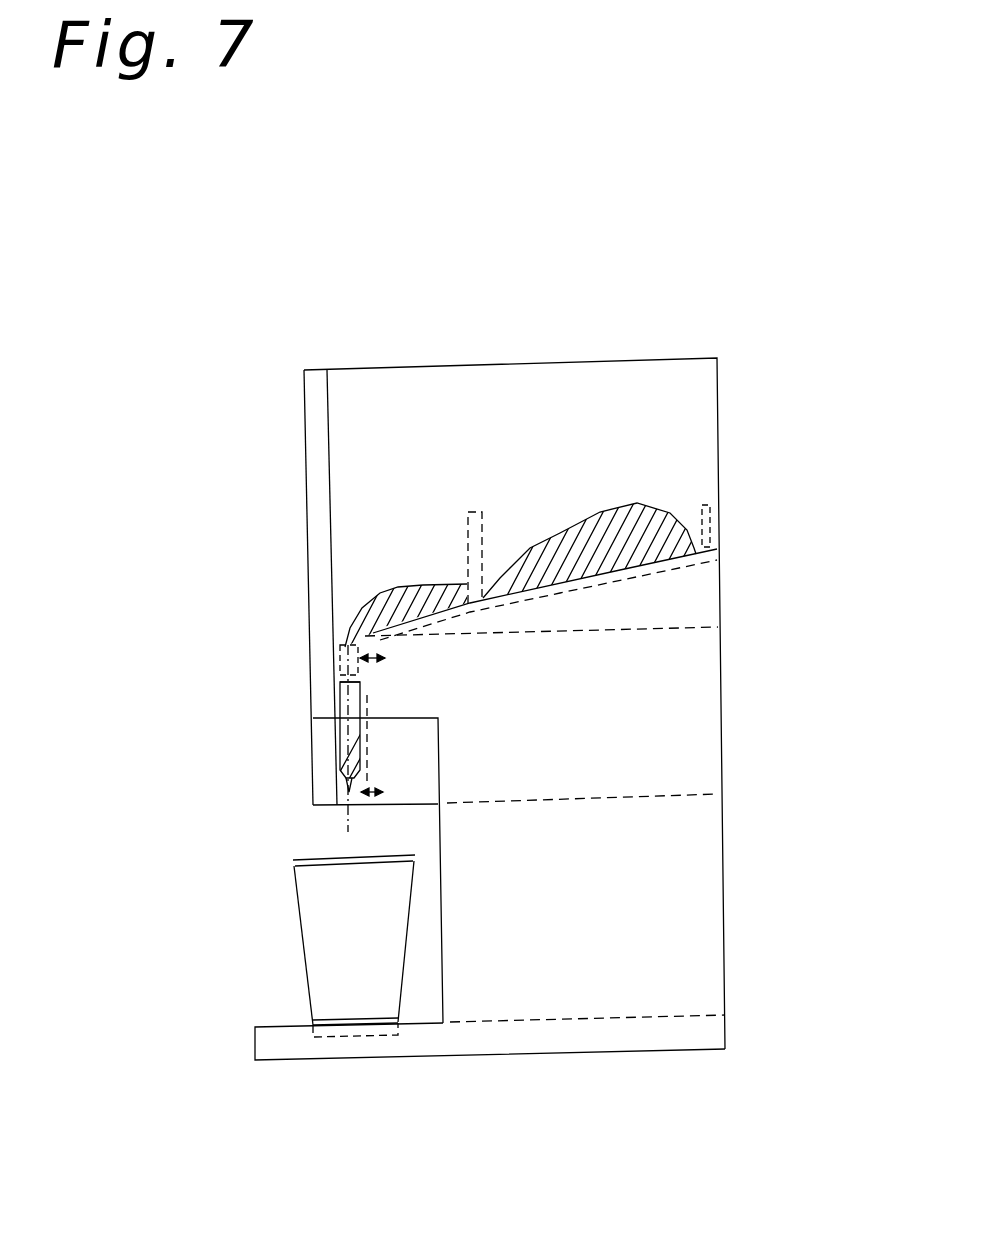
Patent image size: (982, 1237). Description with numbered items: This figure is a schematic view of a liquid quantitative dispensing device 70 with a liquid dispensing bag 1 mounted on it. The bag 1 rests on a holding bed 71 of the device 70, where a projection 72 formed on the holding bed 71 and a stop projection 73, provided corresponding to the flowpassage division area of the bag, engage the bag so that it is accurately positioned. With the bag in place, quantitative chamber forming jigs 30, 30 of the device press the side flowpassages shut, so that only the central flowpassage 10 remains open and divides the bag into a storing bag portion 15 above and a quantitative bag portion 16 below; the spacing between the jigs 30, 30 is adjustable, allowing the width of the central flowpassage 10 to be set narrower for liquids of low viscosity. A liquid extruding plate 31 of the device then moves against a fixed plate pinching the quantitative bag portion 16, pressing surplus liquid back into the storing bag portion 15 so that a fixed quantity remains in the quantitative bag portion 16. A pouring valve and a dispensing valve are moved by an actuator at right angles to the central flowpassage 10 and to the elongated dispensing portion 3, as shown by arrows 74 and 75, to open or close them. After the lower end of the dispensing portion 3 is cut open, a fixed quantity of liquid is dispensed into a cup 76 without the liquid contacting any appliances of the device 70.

The liquid dispensing bag 1 is at (594, 525).
The dispensing portion 3 is at (259, 766).
The central flowpassage 10 is at (447, 705).
The storing bag portion 15 is at (631, 437).
The quantitative bag portion 16 is at (292, 742).
The quantitative chamber forming jig 30 is at (251, 648).
The liquid extruding plate 31 is at (260, 737).
The liquid quantitative dispensing device 70 is at (557, 709).
The holding bed 71 is at (615, 594).
The projection 72 is at (781, 516).
The stop projection 73 is at (525, 408).
The arrow 74 is at (448, 672).
The arrow 75 is at (385, 788).
The cup 76 is at (285, 946).